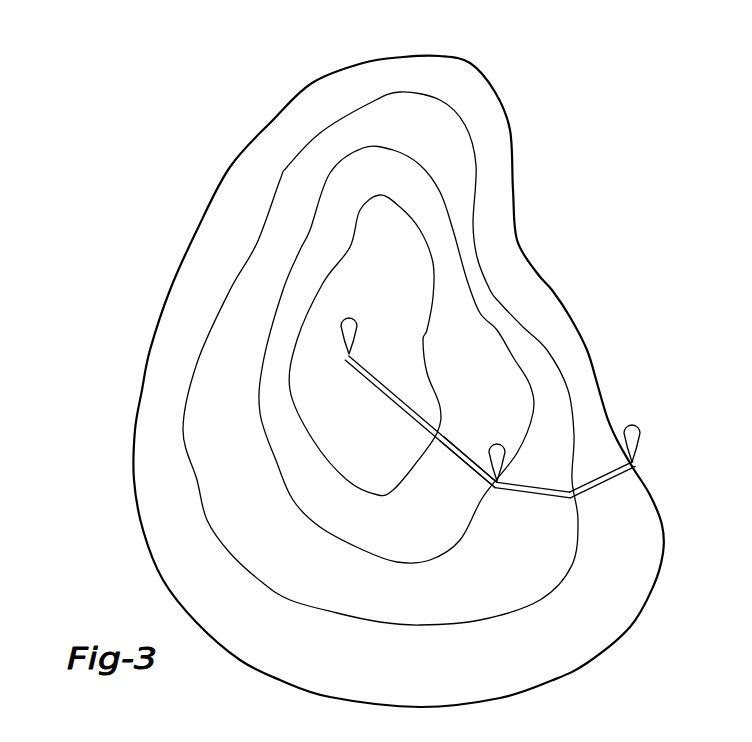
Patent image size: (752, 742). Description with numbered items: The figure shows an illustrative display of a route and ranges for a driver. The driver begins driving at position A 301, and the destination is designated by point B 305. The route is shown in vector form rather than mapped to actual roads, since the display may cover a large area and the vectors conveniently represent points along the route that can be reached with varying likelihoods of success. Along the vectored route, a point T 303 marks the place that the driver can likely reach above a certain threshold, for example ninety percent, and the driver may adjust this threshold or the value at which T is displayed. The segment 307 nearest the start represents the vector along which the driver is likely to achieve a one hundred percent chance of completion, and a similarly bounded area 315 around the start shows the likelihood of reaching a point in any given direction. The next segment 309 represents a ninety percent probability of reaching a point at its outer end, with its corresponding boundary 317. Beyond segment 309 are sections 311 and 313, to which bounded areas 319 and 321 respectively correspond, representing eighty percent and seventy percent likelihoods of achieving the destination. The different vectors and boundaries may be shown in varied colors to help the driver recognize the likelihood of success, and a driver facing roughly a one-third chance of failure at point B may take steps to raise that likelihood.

The position A 301 is at (349, 317).
The point T 303 is at (497, 444).
The point B 305 is at (640, 428).
The segment 307 is at (380, 394).
The segment 309 is at (462, 468).
The section 311 is at (533, 496).
The section 313 is at (603, 489).
The bounded area 315 is at (410, 338).
The boundary 317 is at (398, 172).
The bounded area 319 is at (470, 181).
The bounded area 321 is at (498, 137).